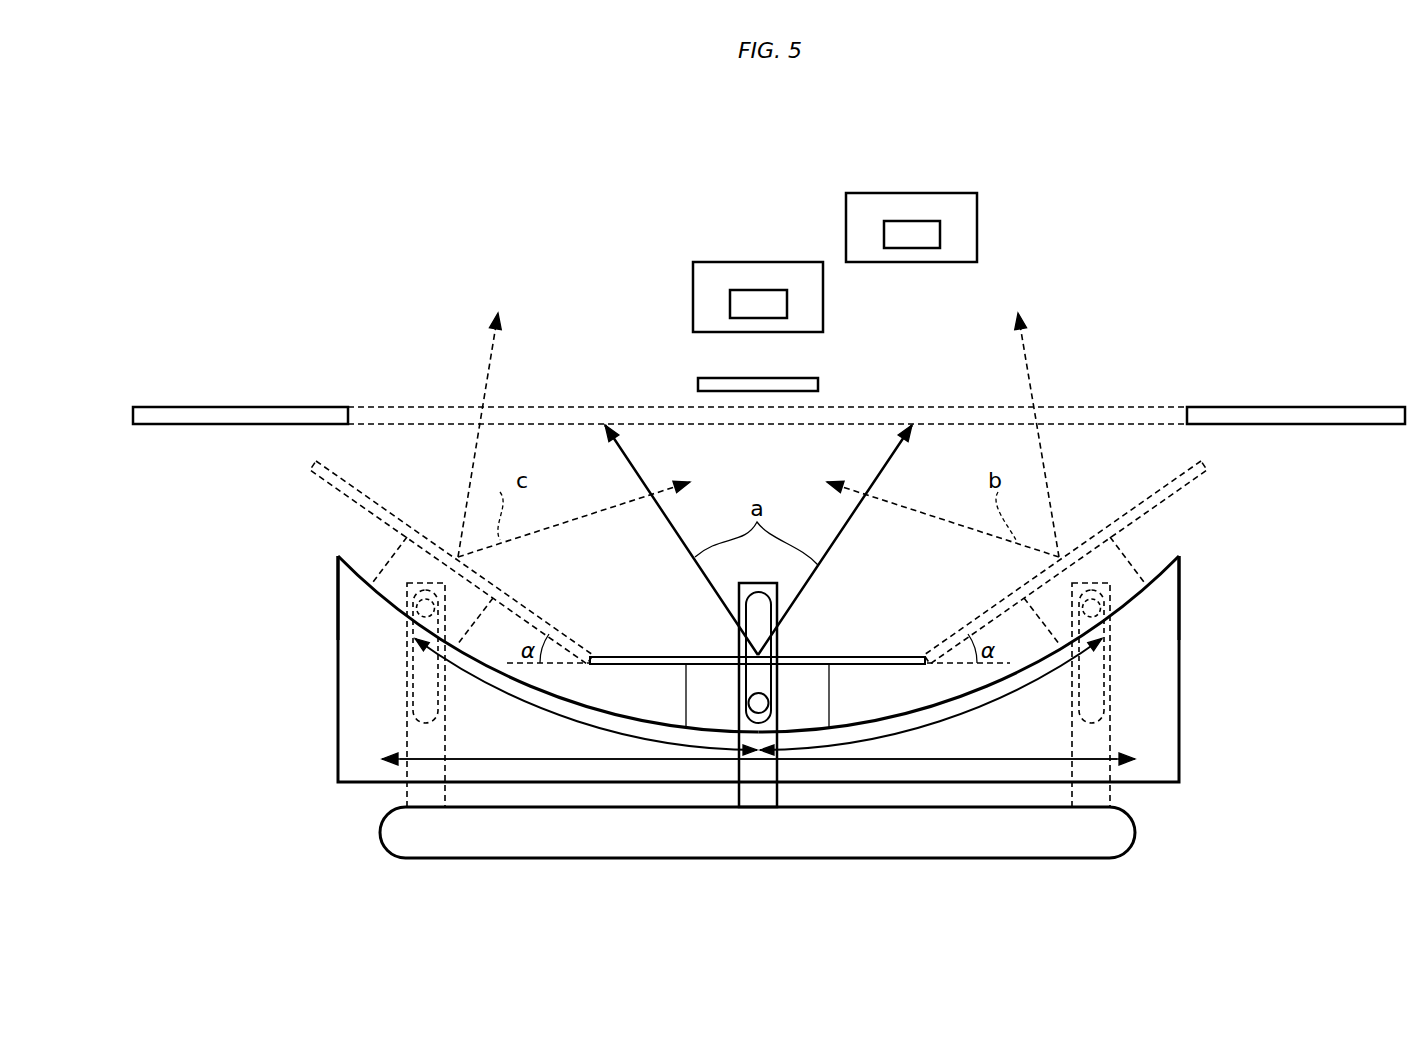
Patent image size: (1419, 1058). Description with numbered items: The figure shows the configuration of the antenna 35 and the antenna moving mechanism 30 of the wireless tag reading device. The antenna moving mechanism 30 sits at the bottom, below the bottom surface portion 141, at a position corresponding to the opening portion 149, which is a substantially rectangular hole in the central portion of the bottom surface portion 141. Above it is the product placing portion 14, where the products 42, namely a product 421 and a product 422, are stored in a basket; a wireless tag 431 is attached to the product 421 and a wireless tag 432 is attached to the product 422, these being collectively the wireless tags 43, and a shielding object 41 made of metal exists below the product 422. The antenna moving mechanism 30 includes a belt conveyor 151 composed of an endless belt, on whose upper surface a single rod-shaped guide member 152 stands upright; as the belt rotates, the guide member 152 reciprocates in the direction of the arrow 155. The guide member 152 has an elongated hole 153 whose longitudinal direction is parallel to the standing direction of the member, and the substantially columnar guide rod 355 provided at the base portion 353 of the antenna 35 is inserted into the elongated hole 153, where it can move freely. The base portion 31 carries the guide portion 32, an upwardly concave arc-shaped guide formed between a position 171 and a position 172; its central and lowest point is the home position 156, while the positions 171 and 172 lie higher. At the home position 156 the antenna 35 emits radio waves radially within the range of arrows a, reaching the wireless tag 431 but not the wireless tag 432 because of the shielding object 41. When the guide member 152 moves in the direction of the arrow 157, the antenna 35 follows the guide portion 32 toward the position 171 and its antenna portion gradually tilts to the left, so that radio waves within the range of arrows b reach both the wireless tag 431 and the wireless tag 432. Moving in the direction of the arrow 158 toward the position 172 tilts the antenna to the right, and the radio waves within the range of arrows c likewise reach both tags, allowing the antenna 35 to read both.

The product placing portion 14 is at (620, 253).
The antenna moving mechanism 30 is at (656, 620).
The base portion 31 is at (1163, 764).
The guide portion 32 is at (1035, 663).
The antenna 35 is at (369, 496).
The shielding object 41 is at (698, 385).
The products 42 is at (835, 212).
The wireless tags 43 is at (920, 269).
The bottom surface portion 141 is at (240, 406).
The opening portion 149 is at (1092, 443).
The belt conveyor 151 is at (1137, 830).
The guide member 152 is at (777, 790).
The elongated hole 153 is at (755, 677).
The arrow 155 is at (1042, 760).
The home position 156 is at (758, 753).
The arrow 157 is at (960, 714).
The arrow 158 is at (542, 710).
The position 171 is at (1144, 581).
The position 172 is at (373, 581).
The base portion 353 is at (808, 676).
The guide rod 355 is at (770, 702).
The product 421 is at (911, 202).
The product 422 is at (780, 270).
The wireless tag 431 is at (940, 235).
The wireless tag 432 is at (775, 302).